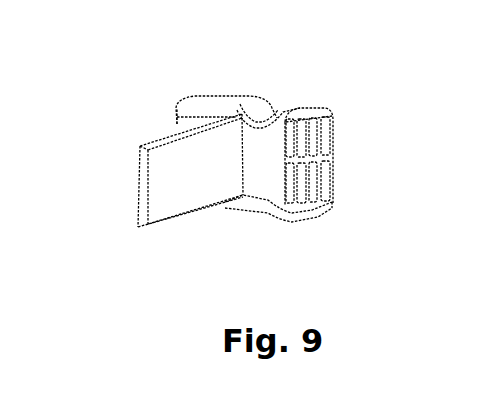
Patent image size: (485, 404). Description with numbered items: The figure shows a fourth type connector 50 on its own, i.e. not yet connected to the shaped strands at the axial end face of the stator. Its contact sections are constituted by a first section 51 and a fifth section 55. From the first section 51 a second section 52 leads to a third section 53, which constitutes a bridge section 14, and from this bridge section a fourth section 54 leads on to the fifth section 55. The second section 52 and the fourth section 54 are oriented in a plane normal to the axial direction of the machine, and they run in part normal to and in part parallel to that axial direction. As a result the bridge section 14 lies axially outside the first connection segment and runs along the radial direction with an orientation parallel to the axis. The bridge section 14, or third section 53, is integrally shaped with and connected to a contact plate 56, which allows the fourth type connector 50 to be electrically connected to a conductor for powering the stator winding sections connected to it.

The fourth type connector 50 is at (210, 159).
The bridge section 14 is at (180, 126).
The third section 53 is at (161, 105).
The second section 52 is at (240, 93).
The first section 51 is at (310, 169).
The fifth section 55 is at (330, 207).
The fourth section 54 is at (263, 213).
The contact plate 56 is at (160, 221).